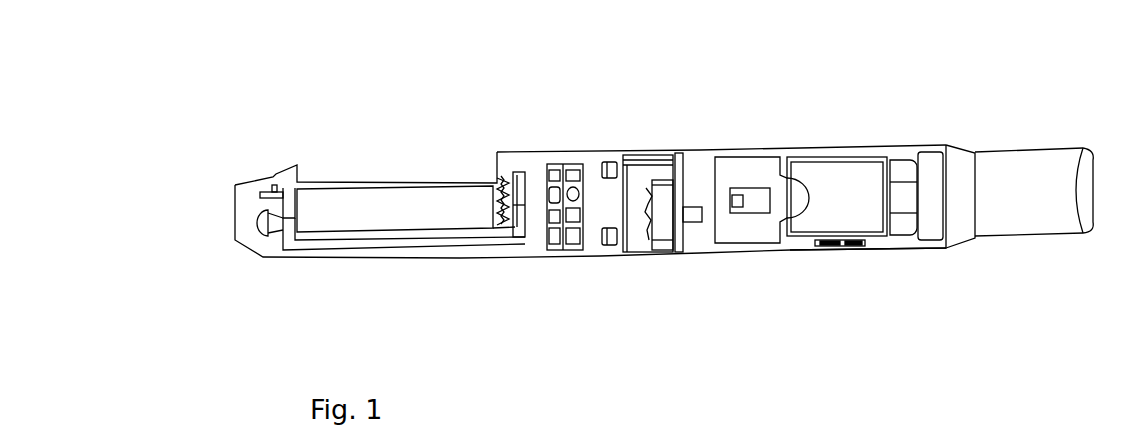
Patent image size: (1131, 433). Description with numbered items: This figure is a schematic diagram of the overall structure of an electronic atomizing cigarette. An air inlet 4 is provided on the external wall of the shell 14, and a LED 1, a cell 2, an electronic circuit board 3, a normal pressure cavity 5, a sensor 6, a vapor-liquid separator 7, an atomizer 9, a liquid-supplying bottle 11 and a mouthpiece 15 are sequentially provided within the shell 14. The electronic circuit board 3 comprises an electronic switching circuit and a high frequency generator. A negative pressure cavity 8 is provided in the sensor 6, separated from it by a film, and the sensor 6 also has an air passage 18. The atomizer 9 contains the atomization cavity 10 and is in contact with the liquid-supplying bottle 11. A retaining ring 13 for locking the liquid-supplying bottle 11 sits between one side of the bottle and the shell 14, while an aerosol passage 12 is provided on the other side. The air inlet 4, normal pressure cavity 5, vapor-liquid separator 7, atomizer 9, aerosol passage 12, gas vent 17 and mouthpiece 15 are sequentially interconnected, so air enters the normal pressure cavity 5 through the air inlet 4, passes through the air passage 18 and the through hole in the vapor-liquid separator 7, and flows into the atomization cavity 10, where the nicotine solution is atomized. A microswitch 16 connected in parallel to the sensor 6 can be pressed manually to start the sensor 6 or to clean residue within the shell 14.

The LED 1 is at (574, 154).
The cell 2 is at (406, 140).
The electronic circuit board 3 is at (523, 132).
The air inlet 4 is at (586, 135).
The normal pressure cavity 5 is at (572, 251).
The sensor 6 is at (644, 247).
The vapor-liquid separator 7 is at (680, 244).
The negative pressure cavity 8 is at (632, 137).
The atomizer 9 is at (762, 246).
The atomization cavity 10 is at (722, 118).
The liquid-supplying bottle 11 is at (837, 243).
The aerosol passage 12 is at (721, 86).
The retaining ring 13 is at (842, 285).
The shell 14 is at (868, 288).
The mouthpiece 15 is at (1004, 128).
The microswitch 16 is at (270, 143).
The gas vent 17 is at (872, 124).
The air passage 18 is at (632, 131).